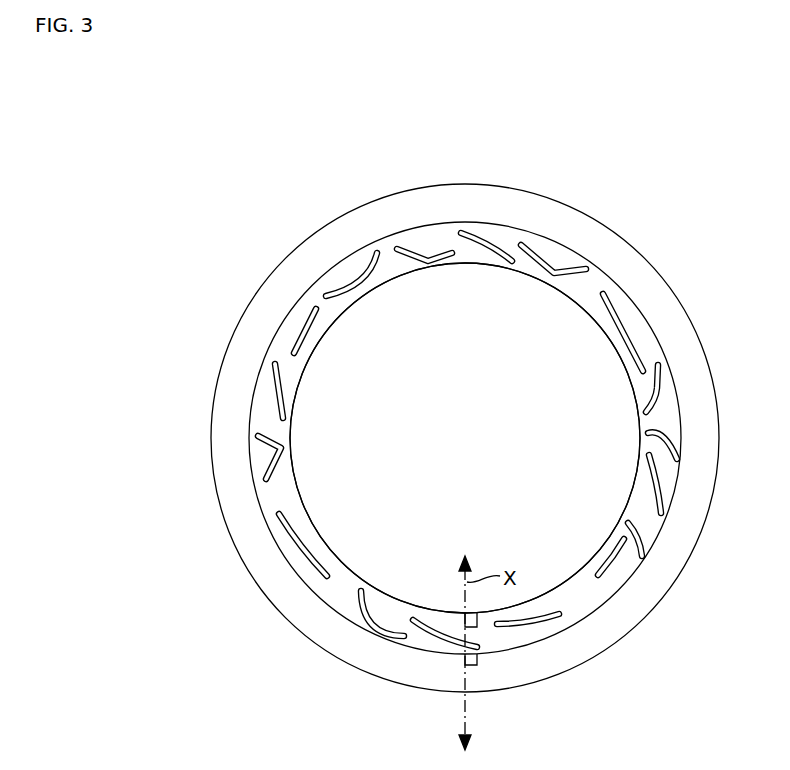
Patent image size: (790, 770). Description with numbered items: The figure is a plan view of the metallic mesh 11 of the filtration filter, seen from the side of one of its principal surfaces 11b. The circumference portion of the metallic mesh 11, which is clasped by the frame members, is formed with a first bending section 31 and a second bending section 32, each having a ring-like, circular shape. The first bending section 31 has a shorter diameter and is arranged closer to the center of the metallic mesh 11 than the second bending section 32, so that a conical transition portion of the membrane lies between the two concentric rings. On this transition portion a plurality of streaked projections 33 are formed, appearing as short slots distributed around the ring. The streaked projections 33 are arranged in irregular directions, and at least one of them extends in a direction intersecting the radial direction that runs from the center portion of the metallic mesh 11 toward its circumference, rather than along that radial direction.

The metallic mesh 11 is at (611, 200).
The principal surfaces 11b is at (408, 332).
The first bending section 31 is at (640, 463).
The second bending section 32 is at (681, 472).
The streaked projections 33 is at (663, 506).